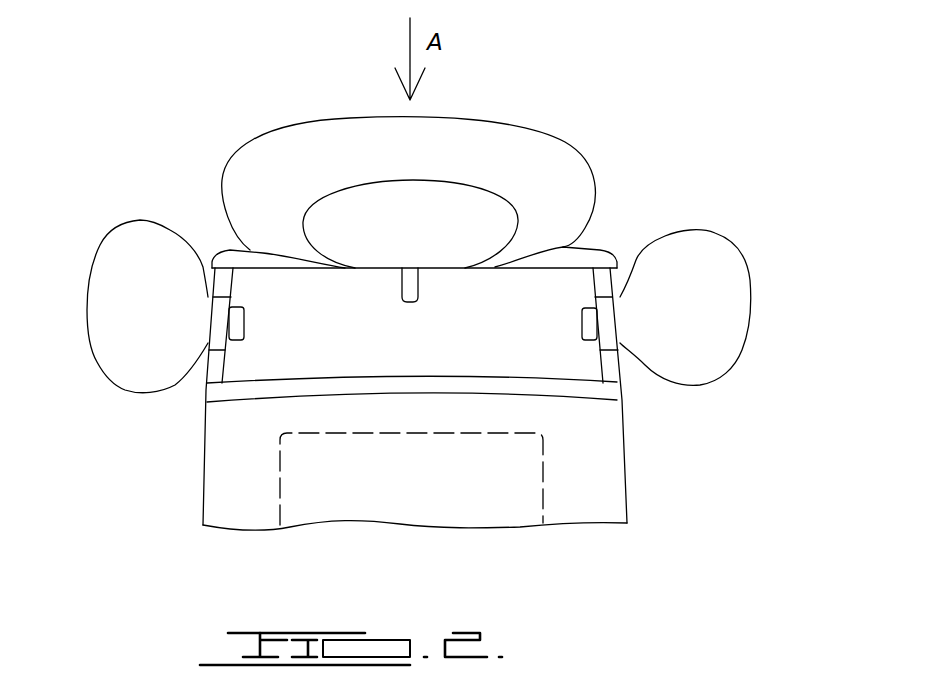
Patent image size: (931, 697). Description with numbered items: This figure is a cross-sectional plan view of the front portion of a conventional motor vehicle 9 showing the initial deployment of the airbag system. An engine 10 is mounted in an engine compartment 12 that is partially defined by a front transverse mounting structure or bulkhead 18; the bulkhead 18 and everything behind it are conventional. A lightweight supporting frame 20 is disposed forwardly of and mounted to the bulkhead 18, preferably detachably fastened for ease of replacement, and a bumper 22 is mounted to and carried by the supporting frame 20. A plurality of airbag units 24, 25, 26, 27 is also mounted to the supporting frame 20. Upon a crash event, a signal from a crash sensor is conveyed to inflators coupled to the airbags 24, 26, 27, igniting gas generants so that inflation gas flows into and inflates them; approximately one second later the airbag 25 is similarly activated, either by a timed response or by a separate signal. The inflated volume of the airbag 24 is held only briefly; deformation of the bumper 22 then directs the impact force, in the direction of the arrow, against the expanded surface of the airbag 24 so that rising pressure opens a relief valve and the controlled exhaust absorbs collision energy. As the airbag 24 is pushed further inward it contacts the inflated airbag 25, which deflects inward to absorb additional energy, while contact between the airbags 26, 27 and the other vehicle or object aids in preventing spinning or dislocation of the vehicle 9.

The motor vehicle 9 is at (653, 568).
The engine 10 is at (402, 503).
The engine compartment 12 is at (601, 489).
The bulkhead 18 is at (612, 390).
The supporting frame 20 is at (268, 381).
The bumper 22 is at (237, 255).
The airbag unit 24 is at (527, 148).
The airbag unit 25 is at (498, 232).
The airbag unit 26 is at (128, 363).
The airbag unit 27 is at (720, 263).